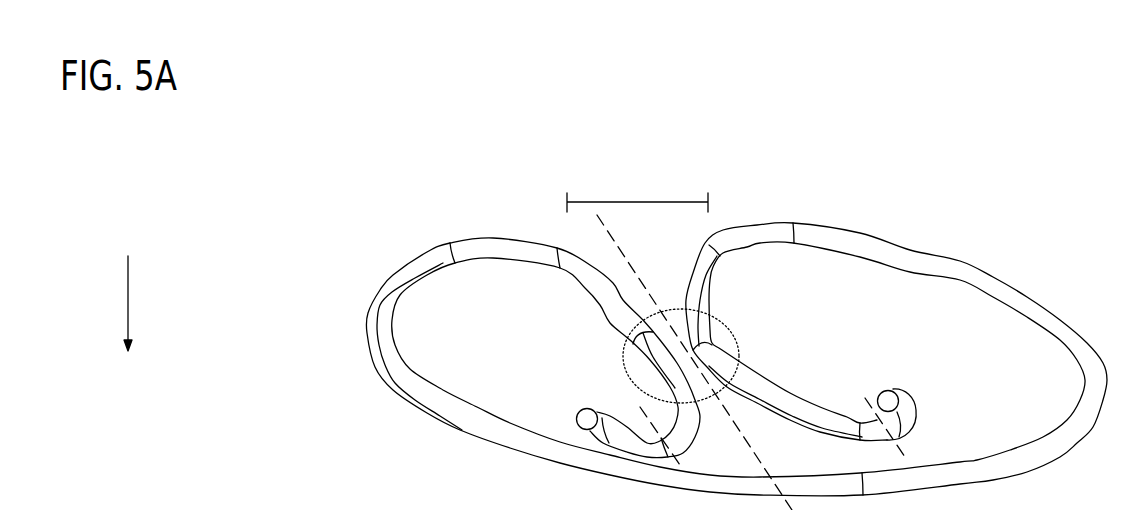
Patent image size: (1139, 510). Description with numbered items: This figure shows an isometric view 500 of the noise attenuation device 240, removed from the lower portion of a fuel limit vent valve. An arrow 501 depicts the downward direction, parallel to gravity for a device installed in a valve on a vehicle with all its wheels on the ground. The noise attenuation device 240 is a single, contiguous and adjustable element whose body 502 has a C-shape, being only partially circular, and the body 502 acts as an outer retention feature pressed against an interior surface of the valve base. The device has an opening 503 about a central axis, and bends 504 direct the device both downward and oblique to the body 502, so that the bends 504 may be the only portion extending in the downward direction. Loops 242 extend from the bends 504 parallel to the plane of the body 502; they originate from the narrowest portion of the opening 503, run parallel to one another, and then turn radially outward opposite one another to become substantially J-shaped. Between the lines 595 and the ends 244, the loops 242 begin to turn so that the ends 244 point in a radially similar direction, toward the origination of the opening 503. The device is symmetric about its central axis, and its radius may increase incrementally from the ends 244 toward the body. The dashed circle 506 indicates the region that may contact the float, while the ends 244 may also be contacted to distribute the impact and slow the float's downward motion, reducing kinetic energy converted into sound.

The noise attenuation device 240 is at (757, 103).
The loops 242 is at (797, 427).
The ends 244 is at (580, 411).
The isometric view 500 is at (656, 294).
The arrow 501 is at (129, 273).
The body 502 is at (627, 480).
The opening 503 is at (607, 200).
The bends 504 is at (695, 273).
The dashed circle 506 is at (732, 333).
The lines 595 is at (655, 424).